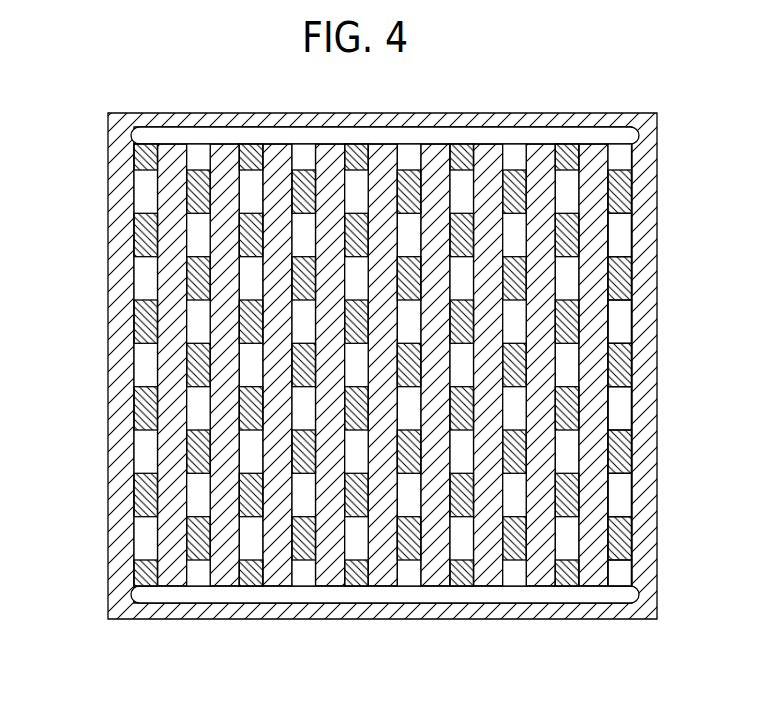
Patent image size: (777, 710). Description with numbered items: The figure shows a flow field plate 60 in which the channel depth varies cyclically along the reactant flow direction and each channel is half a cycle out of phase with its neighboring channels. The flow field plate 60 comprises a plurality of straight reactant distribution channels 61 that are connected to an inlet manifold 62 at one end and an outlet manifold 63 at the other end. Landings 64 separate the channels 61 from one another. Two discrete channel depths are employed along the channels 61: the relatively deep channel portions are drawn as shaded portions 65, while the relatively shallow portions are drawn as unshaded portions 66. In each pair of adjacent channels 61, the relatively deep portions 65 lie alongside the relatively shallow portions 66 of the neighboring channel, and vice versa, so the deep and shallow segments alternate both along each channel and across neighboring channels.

The flow field plate 60 is at (657, 308).
The reactant distribution channels 61 is at (508, 158).
The inlet manifold 62 is at (613, 132).
The outlet manifold 63 is at (622, 595).
The landings 64 is at (272, 157).
The relatively deep channel portions 65 is at (143, 503).
The relatively shallow channel portions 66 is at (633, 570).